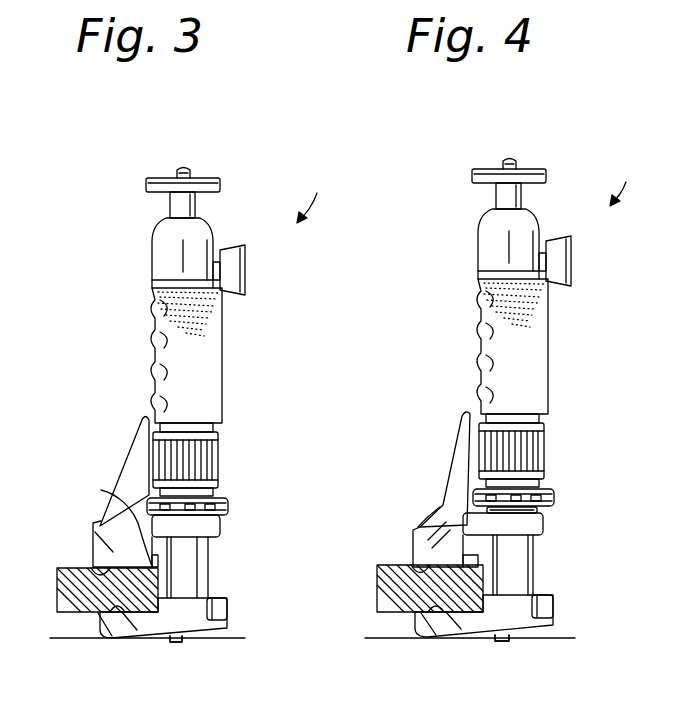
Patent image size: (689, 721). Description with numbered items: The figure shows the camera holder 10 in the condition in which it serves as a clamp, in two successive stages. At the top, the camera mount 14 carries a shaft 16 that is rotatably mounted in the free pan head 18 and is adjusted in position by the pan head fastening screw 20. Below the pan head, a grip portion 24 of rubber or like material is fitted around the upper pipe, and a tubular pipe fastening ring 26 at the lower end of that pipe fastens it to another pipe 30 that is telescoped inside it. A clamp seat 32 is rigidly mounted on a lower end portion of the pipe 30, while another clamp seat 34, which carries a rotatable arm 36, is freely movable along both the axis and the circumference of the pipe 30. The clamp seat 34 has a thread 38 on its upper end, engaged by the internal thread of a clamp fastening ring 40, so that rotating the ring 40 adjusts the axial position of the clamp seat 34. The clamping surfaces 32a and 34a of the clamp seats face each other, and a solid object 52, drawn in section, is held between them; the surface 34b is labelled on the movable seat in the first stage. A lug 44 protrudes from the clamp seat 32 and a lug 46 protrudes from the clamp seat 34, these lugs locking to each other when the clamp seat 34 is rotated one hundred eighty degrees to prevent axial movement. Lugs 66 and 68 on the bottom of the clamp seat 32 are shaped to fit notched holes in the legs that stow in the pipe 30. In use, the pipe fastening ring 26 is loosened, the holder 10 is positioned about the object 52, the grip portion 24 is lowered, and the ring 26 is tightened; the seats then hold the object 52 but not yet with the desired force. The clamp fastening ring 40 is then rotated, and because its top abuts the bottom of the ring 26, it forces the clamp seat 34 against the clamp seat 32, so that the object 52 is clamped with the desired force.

In FIG. 3, the camera holder 10 is at (321, 198).
In FIG. 4, the camera holder 10 is at (633, 181).
In FIG. 3, the camera mount 14 is at (218, 179).
In FIG. 4, the camera mount 14 is at (547, 172).
In FIG. 3, the shaft 16 is at (196, 205).
In FIG. 4, the shaft 16 is at (523, 196).
In FIG. 3, the free pan head 18 is at (214, 240).
In FIG. 4, the free pan head 18 is at (543, 230).
In FIG. 3, the pan head fastening screw 20 is at (246, 265).
In FIG. 4, the pan head fastening screw 20 is at (571, 259).
In FIG. 3, the grip portion 24 is at (223, 316).
In FIG. 4, the grip portion 24 is at (549, 309).
In FIG. 3, the pipe fastening ring 26 is at (219, 446).
In FIG. 4, the pipe fastening ring 26 is at (546, 432).
In FIG. 3, the pipe 30 is at (211, 560).
In FIG. 4, the pipe 30 is at (536, 557).
In FIG. 3, the clamp seat 32 is at (150, 627).
In FIG. 4, the clamp seat 32 is at (475, 623).
In FIG. 3, the clamping surface 32a is at (127, 622).
In FIG. 4, the clamping surface 32a is at (448, 620).
In FIG. 3, the clamp seat 34 is at (103, 526).
In FIG. 4, the clamp seat 34 is at (424, 533).
In FIG. 4, the clamping surface 34a is at (415, 585).
In FIG. 3, the clamp body portion 34b is at (100, 598).
In FIG. 3, the rotatable arm 36 is at (142, 443).
In FIG. 4, the rotatable arm 36 is at (457, 440).
In FIG. 4, the thread 38 is at (543, 513).
In FIG. 3, the clamp fastening ring 40 is at (229, 505).
In FIG. 4, the clamp fastening ring 40 is at (553, 497).
In FIG. 3, the lug 44 is at (224, 620).
In FIG. 4, the lug 44 is at (547, 618).
In FIG. 3, the lug 46 is at (122, 500).
In FIG. 4, the lug 46 is at (440, 507).
In FIG. 3, the solid object 52 is at (72, 597).
In FIG. 4, the solid object 52 is at (392, 597).
In FIG. 3, the lug 66 is at (178, 642).
In FIG. 4, the lug 66 is at (508, 641).
In FIG. 3, the lug 68 is at (176, 639).
In FIG. 4, the lug 68 is at (502, 638).